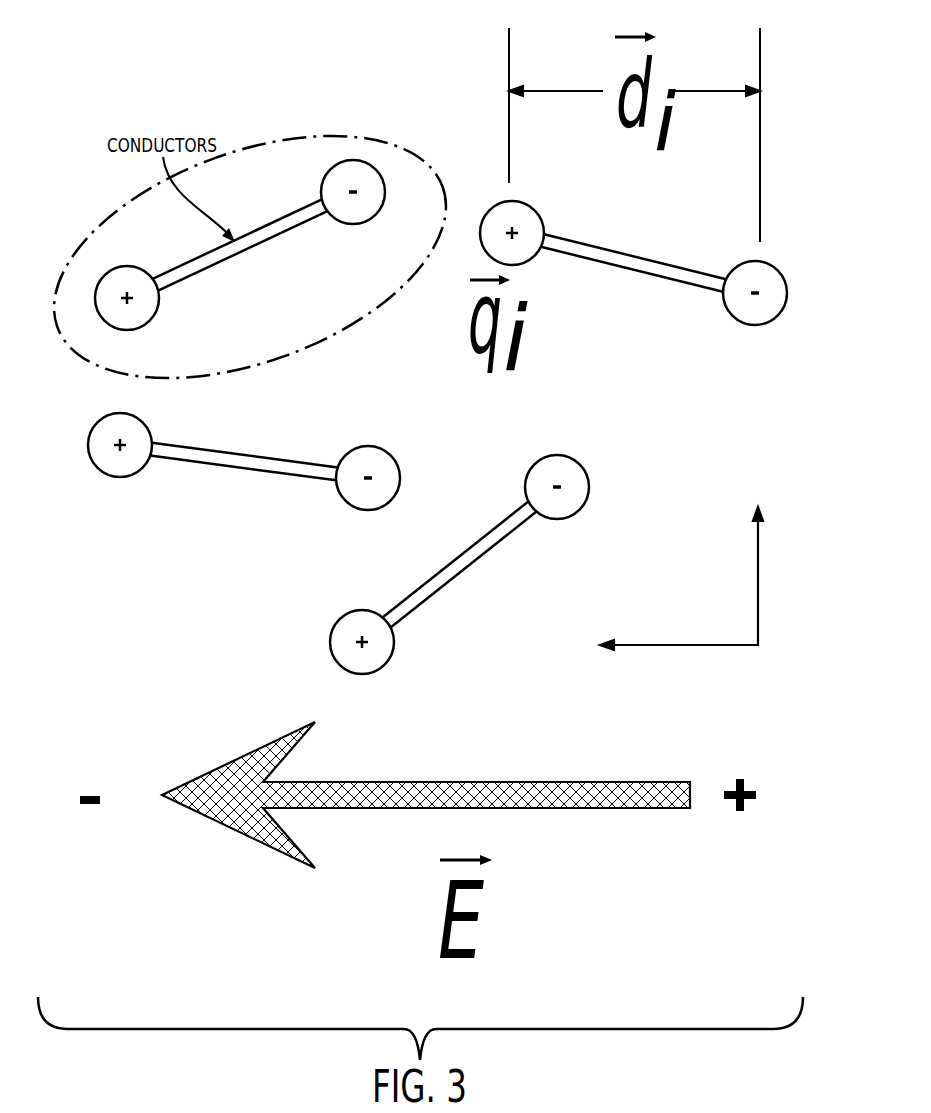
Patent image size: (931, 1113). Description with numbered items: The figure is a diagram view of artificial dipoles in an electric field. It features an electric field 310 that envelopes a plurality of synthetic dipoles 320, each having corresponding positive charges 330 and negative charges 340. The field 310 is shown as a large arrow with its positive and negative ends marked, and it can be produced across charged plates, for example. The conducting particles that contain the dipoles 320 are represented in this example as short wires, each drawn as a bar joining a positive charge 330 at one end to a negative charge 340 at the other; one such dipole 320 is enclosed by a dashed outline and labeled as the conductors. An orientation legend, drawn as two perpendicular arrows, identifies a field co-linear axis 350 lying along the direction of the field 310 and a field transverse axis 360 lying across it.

The electric field 310 is at (485, 780).
The synthetic dipoles 320 is at (255, 328).
The positive charges 330 is at (331, 628).
The negative charges 340 is at (588, 485).
The field co-linear axis 350 is at (690, 643).
The field transverse axis 360 is at (760, 580).